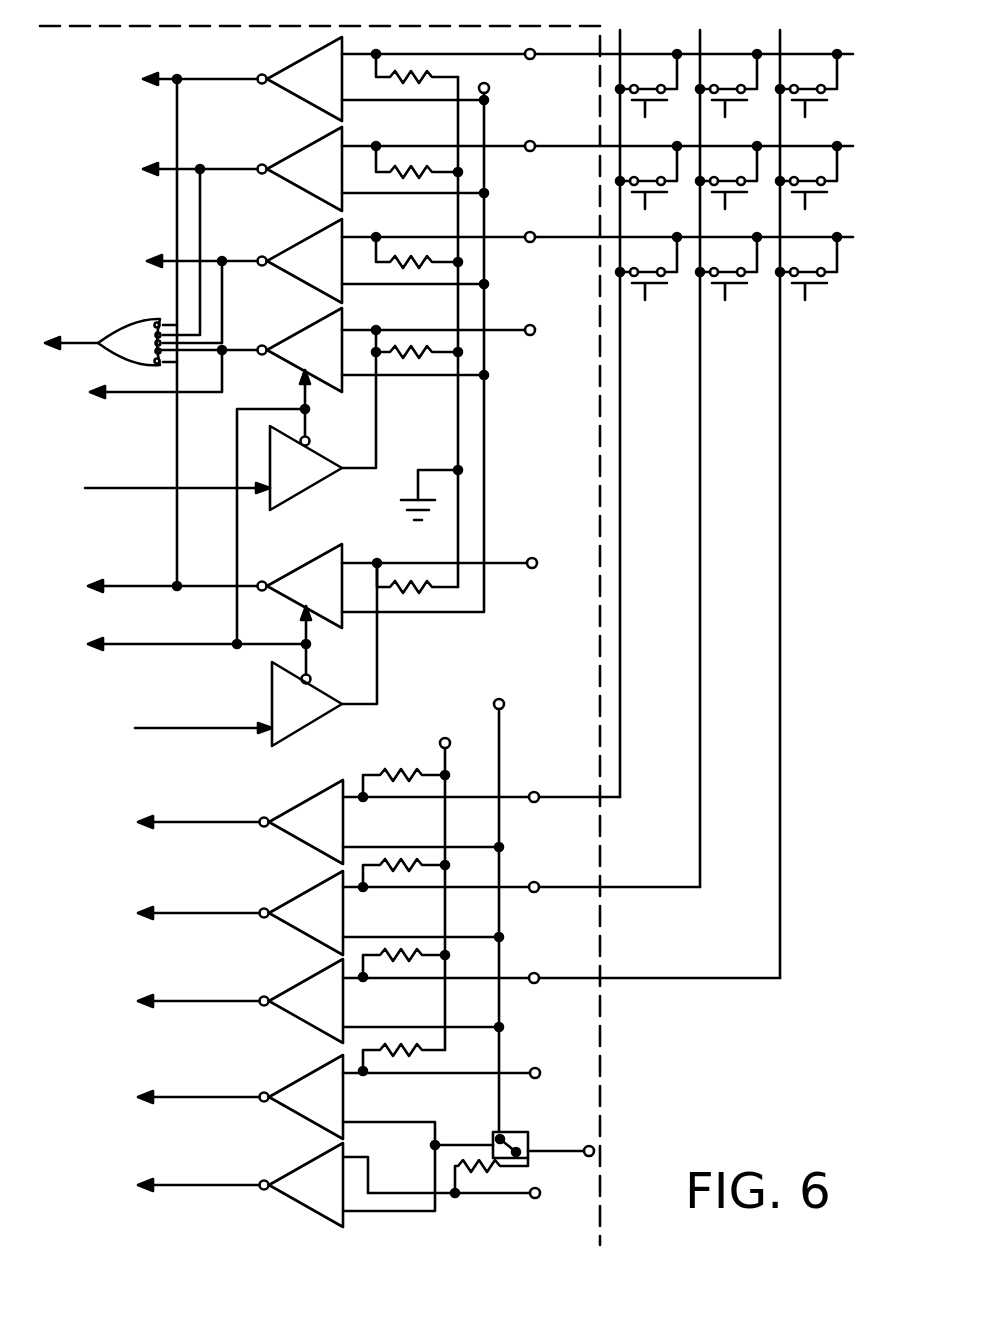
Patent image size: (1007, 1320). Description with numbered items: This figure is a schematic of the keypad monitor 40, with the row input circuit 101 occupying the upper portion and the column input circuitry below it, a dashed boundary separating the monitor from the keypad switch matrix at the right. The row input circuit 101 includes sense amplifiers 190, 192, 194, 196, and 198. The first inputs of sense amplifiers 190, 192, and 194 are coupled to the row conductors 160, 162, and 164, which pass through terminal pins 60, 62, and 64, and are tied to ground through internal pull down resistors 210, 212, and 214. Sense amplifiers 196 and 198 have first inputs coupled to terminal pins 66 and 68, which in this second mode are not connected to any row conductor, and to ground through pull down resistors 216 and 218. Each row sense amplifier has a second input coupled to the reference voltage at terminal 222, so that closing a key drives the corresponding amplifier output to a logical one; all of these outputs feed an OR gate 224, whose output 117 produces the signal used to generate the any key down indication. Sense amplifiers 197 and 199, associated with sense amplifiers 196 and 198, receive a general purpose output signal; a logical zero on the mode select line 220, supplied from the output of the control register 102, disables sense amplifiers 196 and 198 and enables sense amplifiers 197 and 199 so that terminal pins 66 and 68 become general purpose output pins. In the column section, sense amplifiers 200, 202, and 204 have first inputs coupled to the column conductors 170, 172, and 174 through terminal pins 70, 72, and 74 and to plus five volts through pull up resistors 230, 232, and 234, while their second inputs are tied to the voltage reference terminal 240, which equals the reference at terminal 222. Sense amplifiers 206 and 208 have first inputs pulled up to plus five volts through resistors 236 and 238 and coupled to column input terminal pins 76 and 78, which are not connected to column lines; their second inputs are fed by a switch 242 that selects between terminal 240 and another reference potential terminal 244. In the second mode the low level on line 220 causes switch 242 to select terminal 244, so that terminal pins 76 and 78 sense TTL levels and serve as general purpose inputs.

The keyboard interface circuit 40 is at (80, 118).
The row terminal R0 60 is at (516, 60).
The row terminal R1 62 is at (532, 150).
The row terminal R2 64 is at (532, 240).
The terminal pin 66 is at (532, 328).
The terminal pin 68 is at (534, 560).
The column terminal C0 70 is at (536, 802).
The column terminal C1 72 is at (538, 892).
The column terminal C2 74 is at (538, 982).
The column input terminal pin 76 is at (538, 1074).
The column input terminal pin 78 is at (538, 1192).
The row input circuit 101 is at (246, 212).
The control register 102 is at (196, 973).
The output of OR gate 117 is at (92, 340).
The row conductor 160 is at (636, 58).
The row conductor 162 is at (634, 148).
The row conductor 164 is at (634, 239).
The column conductor 170 is at (620, 435).
The column conductor 172 is at (700, 440).
The column conductor 174 is at (780, 447).
The sense amplifier 190 is at (288, 72).
The sense amplifier 192 is at (318, 146).
The sense amplifier 194 is at (320, 232).
The sense amplifier 196 is at (328, 336).
The sense amplifier 197 is at (310, 470).
The sense amplifier 198 is at (320, 570).
The sense amplifier 199 is at (322, 712).
The sense amplifier 200 is at (316, 802).
The sense amplifier 202 is at (310, 894).
The sense amplifier 204 is at (318, 984).
The sense amplifier 206 is at (302, 1080).
The sense amplifier 208 is at (310, 1170).
The pull down resistor 210 is at (430, 70).
The pull down resistor 212 is at (430, 162).
The pull down resistor 214 is at (430, 250).
The pull down resistor 216 is at (434, 336).
The pull down resistor 218 is at (434, 574).
The mode select line 220 is at (152, 646).
The reference voltage terminal 222 is at (488, 92).
The OR gate 224 is at (132, 327).
The pull up resistor 230 is at (422, 776).
The pull up resistor 232 is at (416, 863).
The pull up resistor 234 is at (416, 953).
The pull up resistor 236 is at (418, 1070).
The pull up resistor 238 is at (470, 1162).
The voltage reference terminal 240 is at (502, 708).
The switch 242 is at (512, 1132).
The reference potential terminal 244 is at (594, 1152).